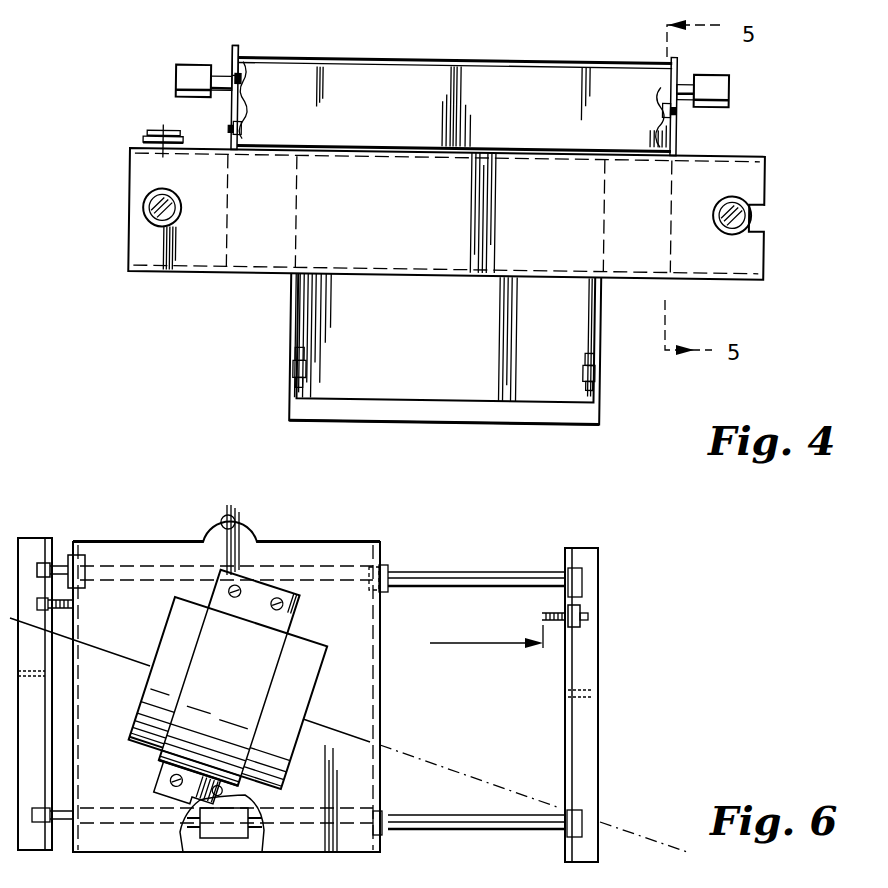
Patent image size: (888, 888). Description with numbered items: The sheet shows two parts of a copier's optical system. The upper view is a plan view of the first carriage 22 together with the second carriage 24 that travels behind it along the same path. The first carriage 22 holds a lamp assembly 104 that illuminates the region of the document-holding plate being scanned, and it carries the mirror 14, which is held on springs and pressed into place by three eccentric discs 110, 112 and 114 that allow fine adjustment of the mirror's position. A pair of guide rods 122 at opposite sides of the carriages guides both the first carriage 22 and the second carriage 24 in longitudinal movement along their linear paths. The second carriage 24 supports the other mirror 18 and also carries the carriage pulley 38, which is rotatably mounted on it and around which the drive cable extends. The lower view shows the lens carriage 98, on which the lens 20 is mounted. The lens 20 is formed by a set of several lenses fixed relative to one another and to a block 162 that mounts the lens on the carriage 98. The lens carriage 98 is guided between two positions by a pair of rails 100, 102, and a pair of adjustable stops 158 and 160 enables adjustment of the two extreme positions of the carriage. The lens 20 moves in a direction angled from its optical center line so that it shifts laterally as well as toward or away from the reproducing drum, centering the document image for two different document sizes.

In FIG. 4, the mirror 14 is at (476, 60).
In FIG. 4, the mirror 18 is at (478, 324).
In FIG. 6, the lens 20 is at (167, 628).
In FIG. 4, the first carriage 22 is at (224, 54).
In FIG. 4, the second carriage 24 is at (290, 287).
In FIG. 4, the carriage pulley 38 is at (150, 128).
In FIG. 6, the lens carriage 98 is at (382, 713).
In FIG. 6, the guide rail 100 is at (443, 820).
In FIG. 6, the guide rail 102 is at (462, 576).
In FIG. 4, the lamp assembly 104 is at (735, 86).
In FIG. 4, the eccentric disc 110 is at (676, 111).
In FIG. 4, the eccentric disc 112 is at (247, 130).
In FIG. 4, the eccentric disc 114 is at (239, 62).
In FIG. 4, the guide rods 122 is at (147, 201).
In FIG. 6, the adjustable stop 158 is at (36, 598).
In FIG. 6, the adjustable stop 160 is at (582, 610).
In FIG. 6, the block 162 is at (300, 616).